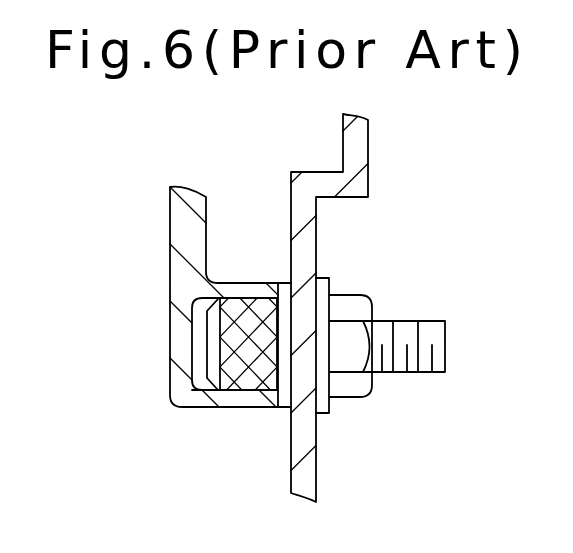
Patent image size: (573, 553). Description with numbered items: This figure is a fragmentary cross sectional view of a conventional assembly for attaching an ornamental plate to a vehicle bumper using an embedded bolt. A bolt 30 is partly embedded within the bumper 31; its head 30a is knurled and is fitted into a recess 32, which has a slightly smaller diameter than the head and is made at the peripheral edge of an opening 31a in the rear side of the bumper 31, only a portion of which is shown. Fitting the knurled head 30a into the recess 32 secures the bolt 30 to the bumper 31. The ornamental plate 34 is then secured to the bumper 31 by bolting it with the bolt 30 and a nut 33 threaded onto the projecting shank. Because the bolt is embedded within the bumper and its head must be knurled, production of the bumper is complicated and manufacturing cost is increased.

The bolt 30 is at (398, 372).
The bolt head 30a is at (252, 307).
The bumper 31 is at (170, 224).
The opening 31a is at (242, 408).
The recess 32 is at (192, 346).
The nut 33 is at (343, 298).
The ornamental plate 34 is at (316, 468).